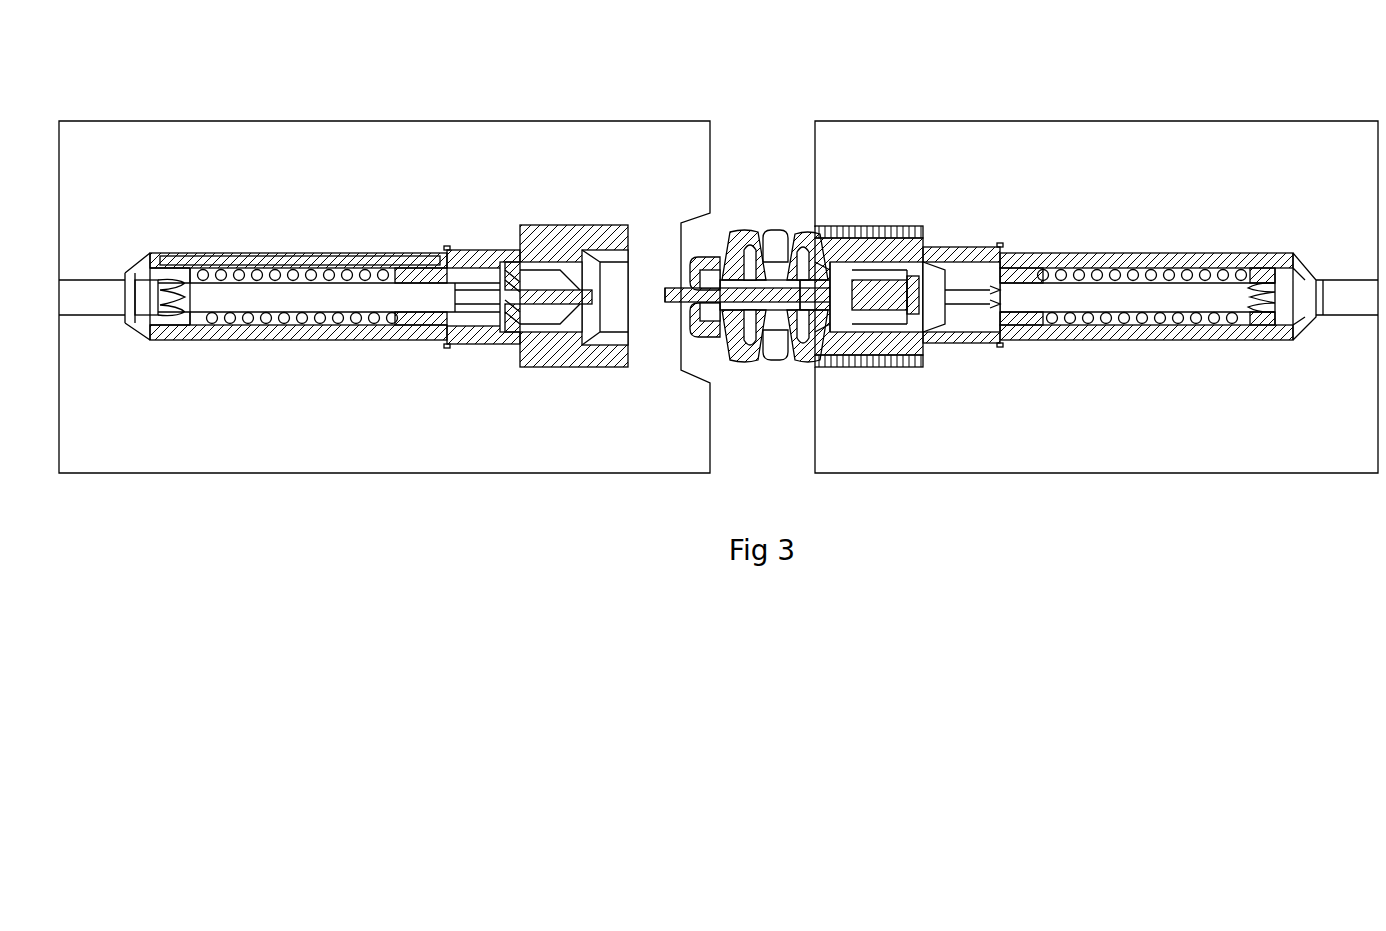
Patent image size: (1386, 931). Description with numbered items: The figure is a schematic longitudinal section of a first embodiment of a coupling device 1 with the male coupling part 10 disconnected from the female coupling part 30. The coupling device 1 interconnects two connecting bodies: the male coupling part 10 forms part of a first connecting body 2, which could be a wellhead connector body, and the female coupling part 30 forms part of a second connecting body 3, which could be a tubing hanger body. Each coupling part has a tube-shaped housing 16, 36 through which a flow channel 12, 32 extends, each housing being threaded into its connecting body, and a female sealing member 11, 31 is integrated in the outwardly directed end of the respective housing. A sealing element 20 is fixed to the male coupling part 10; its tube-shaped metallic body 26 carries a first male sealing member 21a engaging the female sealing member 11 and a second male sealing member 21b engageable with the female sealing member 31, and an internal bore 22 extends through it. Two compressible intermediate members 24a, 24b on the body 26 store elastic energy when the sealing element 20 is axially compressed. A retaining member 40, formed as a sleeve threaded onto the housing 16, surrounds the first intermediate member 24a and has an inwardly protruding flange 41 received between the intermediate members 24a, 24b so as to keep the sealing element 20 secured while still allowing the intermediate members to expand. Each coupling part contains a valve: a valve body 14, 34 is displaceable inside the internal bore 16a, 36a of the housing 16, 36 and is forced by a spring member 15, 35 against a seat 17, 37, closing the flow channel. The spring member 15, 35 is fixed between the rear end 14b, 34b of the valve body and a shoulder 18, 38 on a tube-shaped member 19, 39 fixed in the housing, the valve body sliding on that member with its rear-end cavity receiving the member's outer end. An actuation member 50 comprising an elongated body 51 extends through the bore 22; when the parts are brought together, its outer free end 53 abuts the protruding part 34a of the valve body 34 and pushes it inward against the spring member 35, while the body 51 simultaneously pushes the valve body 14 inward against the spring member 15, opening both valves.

The coupling device 1 is at (765, 112).
The first connecting body 2 is at (985, 137).
The second connecting body 3 is at (393, 137).
The male coupling part 10 is at (1036, 206).
The female sealing member 11 is at (862, 262).
The flow channel 12 is at (1112, 300).
The valve body 14 is at (946, 332).
The rear end of valve body 14b is at (1036, 270).
The spring member 15 is at (1160, 324).
The tube-shaped housing 16 is at (1135, 265).
The internal bore 16a is at (1205, 326).
The seat 17 is at (916, 326).
The shoulder 18 is at (1252, 268).
The tube-shaped member 19 is at (1265, 326).
The sealing element 20 is at (750, 224).
The first male sealing member 21a is at (840, 262).
The second male sealing member 21b is at (705, 257).
The internal bore 22 is at (822, 312).
The first intermediate member 24a is at (823, 320).
The second intermediate member 24b is at (745, 365).
The tube-shaped metallic body 26 is at (735, 262).
The female coupling part 30 is at (460, 222).
The female sealing member 31 is at (592, 248).
The flow channel 32 is at (342, 298).
The valve body 34 is at (502, 332).
The protruding part 34a is at (578, 346).
The rear end of valve body 34b is at (440, 272).
The spring member 35 is at (272, 324).
The tube-shaped housing 36 is at (278, 268).
The internal bore 36a is at (398, 324).
The seat 37 is at (548, 340).
The shoulder 38 is at (197, 272).
The tube-shaped member 39 is at (183, 318).
The retaining member 40 is at (778, 231).
The inwardly protruding flange 41 is at (778, 361).
The actuation member 50 is at (672, 285).
The elongated body 51 is at (722, 312).
The outer free end 53 is at (668, 303).